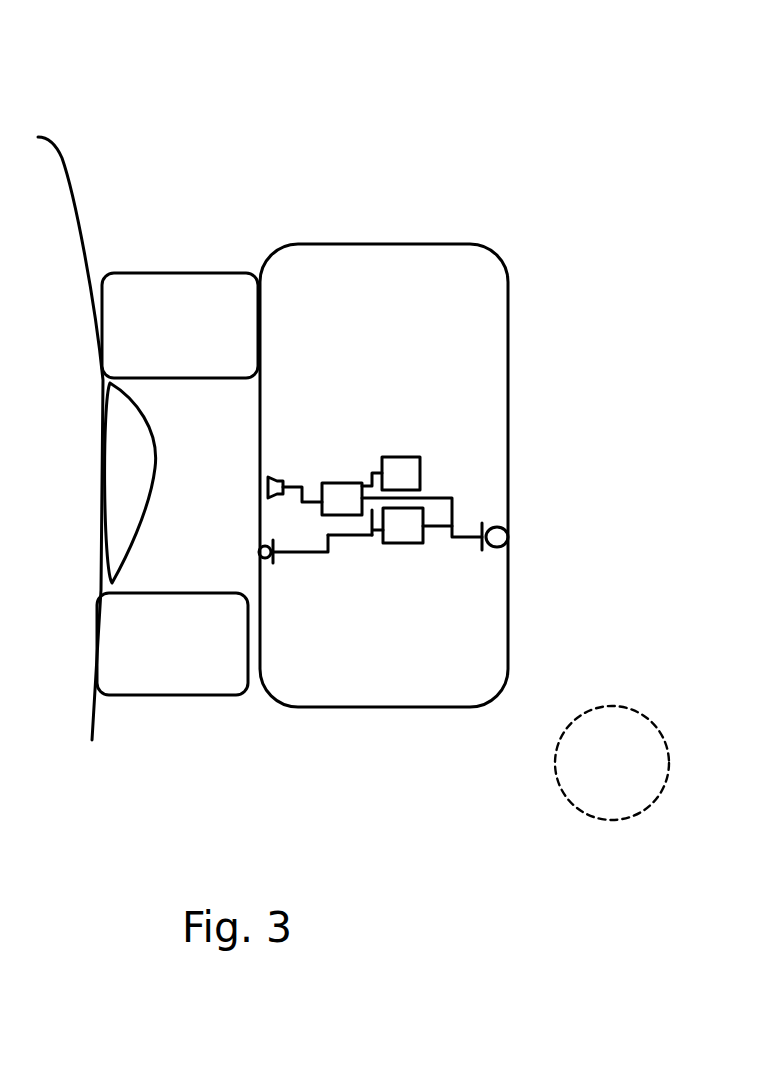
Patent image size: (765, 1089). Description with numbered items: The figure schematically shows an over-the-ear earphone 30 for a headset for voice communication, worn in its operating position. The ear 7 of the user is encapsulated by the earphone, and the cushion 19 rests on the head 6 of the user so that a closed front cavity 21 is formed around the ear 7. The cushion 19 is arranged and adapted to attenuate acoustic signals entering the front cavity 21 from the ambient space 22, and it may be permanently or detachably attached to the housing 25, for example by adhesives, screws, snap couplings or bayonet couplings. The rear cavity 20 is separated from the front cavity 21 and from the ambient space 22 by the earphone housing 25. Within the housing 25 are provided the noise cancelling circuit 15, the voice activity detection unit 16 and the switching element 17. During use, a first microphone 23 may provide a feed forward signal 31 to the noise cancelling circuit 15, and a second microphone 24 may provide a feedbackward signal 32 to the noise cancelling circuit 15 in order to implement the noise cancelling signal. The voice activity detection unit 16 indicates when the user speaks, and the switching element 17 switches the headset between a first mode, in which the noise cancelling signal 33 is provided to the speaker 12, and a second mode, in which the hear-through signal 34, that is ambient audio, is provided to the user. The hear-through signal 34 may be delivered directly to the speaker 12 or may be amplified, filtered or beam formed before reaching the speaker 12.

The head 6 is at (58, 150).
The ear 7 is at (138, 455).
The speaker 12 is at (282, 478).
The noise cancelling circuit 15 is at (417, 543).
The voice activity detection unit 16 is at (403, 457).
The switching element 17 is at (345, 515).
The cushion 19 is at (202, 273).
The rear cavity 20 is at (383, 665).
The front cavity 21 is at (167, 402).
The ambient space 22 is at (612, 763).
The first microphone 23 is at (508, 537).
The second microphone 24 is at (256, 551).
The housing 25 is at (462, 247).
The earphone 30 is at (320, 148).
The feed forward signal 31 is at (442, 526).
The feedbackward signal 32 is at (303, 552).
The noise cancelling signal 33 is at (368, 537).
The hear-through signal 34 is at (455, 512).